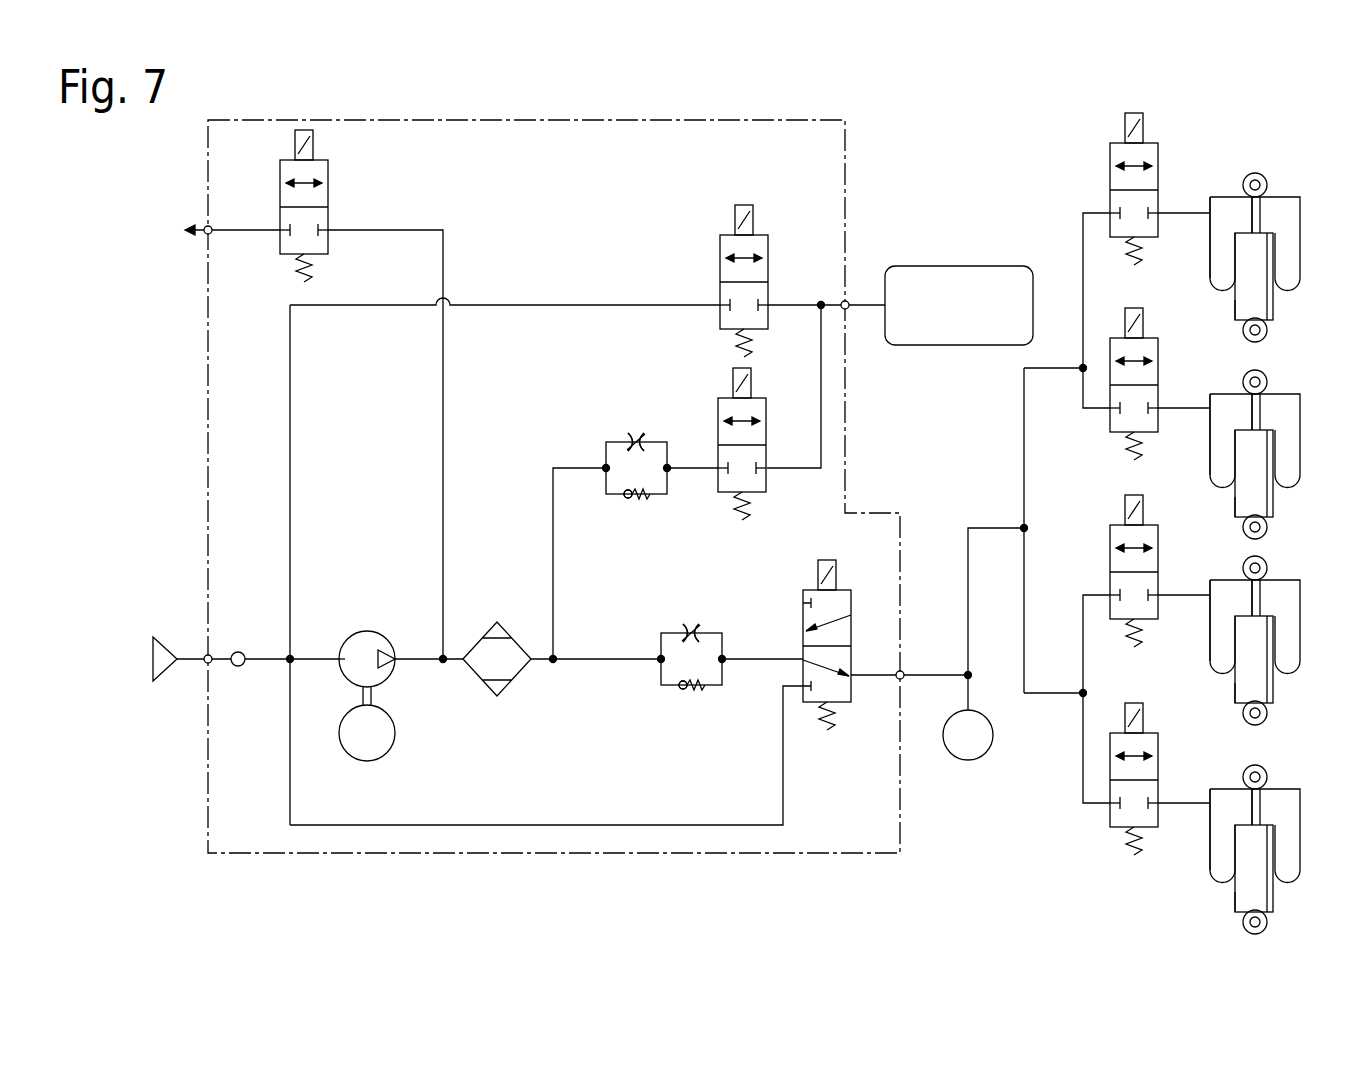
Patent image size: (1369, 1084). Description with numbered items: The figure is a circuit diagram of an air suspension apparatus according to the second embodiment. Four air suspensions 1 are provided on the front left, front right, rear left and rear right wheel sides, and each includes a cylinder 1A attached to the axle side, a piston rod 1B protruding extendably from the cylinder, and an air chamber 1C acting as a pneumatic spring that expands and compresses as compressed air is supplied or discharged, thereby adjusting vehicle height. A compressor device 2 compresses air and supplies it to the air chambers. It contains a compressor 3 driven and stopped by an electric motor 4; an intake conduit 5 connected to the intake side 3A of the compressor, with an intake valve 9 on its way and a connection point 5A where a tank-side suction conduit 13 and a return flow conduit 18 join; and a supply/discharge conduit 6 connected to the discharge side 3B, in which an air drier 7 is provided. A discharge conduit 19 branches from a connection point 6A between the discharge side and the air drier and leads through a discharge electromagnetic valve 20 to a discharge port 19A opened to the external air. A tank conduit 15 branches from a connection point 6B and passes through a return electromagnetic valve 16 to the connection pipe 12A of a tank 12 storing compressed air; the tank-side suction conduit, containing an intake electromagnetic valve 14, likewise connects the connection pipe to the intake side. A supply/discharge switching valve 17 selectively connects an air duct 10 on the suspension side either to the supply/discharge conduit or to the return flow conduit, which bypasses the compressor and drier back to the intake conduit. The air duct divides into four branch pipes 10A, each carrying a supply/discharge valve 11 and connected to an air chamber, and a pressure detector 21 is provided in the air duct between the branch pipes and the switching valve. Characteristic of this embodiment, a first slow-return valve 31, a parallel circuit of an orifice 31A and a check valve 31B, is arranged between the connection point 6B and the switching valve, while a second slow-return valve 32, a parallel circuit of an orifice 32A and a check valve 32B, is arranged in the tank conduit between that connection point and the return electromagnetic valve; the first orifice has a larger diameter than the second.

The air suspension 1 is at (1280, 190).
The cylinder 1A is at (1240, 300).
The piston rod 1B is at (1260, 213).
The air chamber 1C is at (1220, 237).
The compressor device 2 is at (850, 170).
The compressor 3 is at (367, 631).
The intake side 3A is at (340, 657).
The discharge side 3B is at (395, 657).
The electric motor 4 is at (370, 762).
The intake conduit 5 is at (262, 663).
The connection point 5A is at (172, 645).
The supply/discharge conduit 6 is at (598, 657).
The connection point 6A is at (443, 663).
The connection point 6B is at (553, 663).
The air drier 7 is at (497, 622).
The intake valve 9 is at (238, 652).
The air duct 10 is at (918, 672).
The branch pipe 10A is at (1083, 245).
The supply/discharge valve 11 is at (1112, 145).
The tank 12 is at (965, 265).
The connection pipe 12A is at (850, 302).
The tank-side suction conduit 13 is at (495, 300).
The intake electromagnetic valve 14 is at (722, 238).
The tank conduit 15 is at (553, 505).
The return electromagnetic valve 16 is at (718, 400).
The supply/discharge switching valve 17 is at (810, 590).
The return flow conduit 18 is at (515, 825).
The discharge conduit 19 is at (443, 442).
The discharge port 19A is at (188, 237).
The discharge electromagnetic valve 20 is at (280, 205).
The pressure detector 21 is at (968, 762).
The first slow-return valve 31 is at (662, 630).
The orifice 31A is at (691, 632).
The check valve 31B is at (683, 690).
The second slow-return valve 32 is at (608, 440).
The orifice 32A is at (636, 440).
The check valve 32B is at (632, 500).